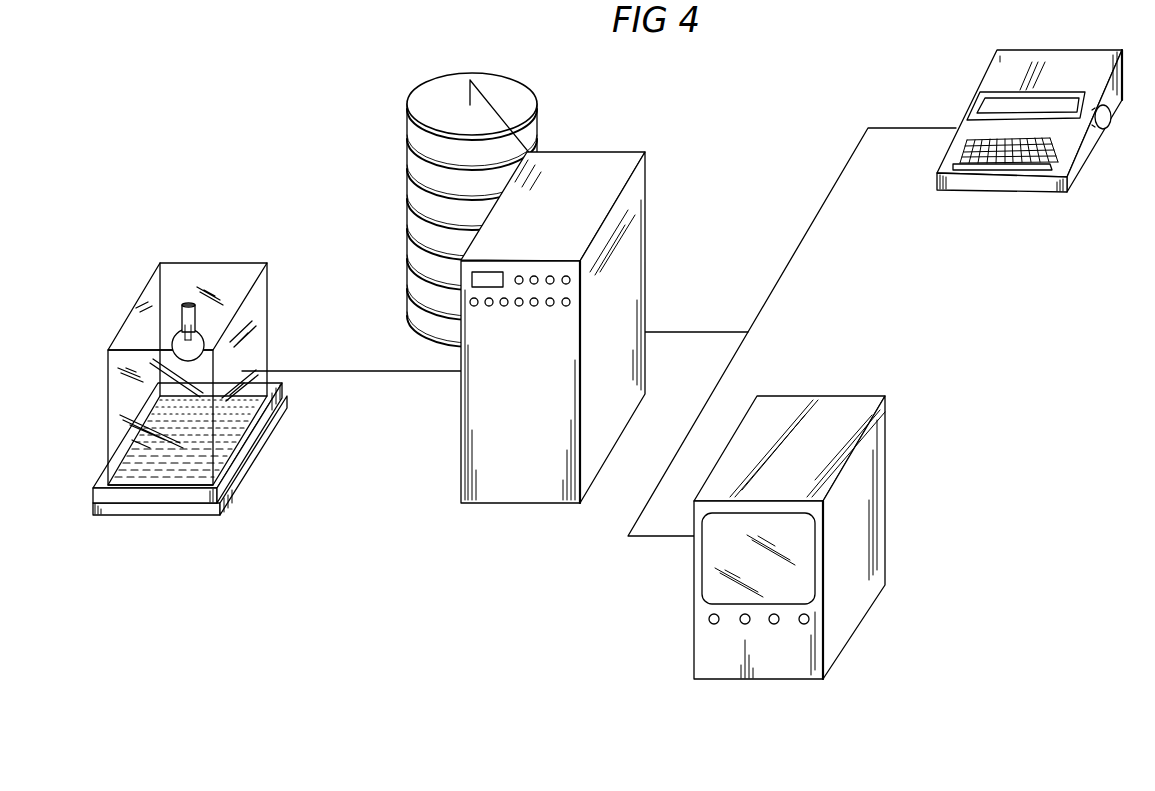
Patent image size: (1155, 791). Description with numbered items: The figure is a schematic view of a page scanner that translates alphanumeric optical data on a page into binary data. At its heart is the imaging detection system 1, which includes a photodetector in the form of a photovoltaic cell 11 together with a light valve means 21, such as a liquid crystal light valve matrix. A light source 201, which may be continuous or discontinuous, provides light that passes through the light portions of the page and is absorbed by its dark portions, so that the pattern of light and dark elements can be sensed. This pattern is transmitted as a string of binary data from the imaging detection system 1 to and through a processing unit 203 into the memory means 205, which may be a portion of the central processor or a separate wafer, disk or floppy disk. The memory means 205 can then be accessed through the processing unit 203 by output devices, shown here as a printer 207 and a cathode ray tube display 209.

The imaging detection system 1 is at (108, 452).
The photovoltaic cell 11 is at (168, 516).
The light valve means 21 is at (102, 477).
The light source 201 is at (181, 333).
The processing unit 203 is at (485, 504).
The memory means 205 is at (437, 76).
The printer 207 is at (989, 192).
The cathode ray tube display 209 is at (832, 396).